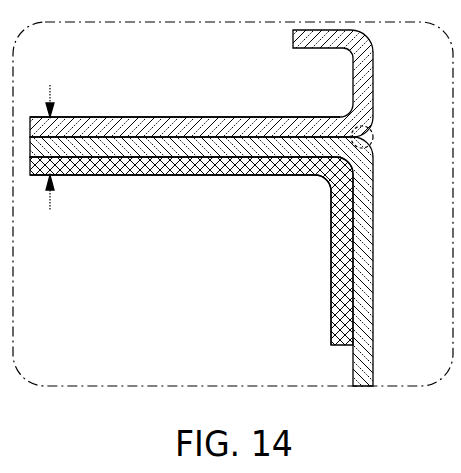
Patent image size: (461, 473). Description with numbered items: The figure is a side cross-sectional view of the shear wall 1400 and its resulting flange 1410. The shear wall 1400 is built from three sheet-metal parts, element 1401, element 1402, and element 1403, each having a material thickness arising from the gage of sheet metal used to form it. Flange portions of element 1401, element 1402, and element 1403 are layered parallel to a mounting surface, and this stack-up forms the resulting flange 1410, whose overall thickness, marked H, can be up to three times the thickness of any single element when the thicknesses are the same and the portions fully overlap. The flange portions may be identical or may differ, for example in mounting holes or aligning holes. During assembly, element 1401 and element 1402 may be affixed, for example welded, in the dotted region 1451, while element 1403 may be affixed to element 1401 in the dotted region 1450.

The shear wall 1400 is at (257, 52).
The element 1401 is at (352, 377).
The element 1402 is at (350, 97).
The element 1403 is at (332, 290).
The resulting flange 1410 is at (183, 117).
The region 1450 is at (329, 211).
The region 1451 is at (374, 135).
The stack height H is at (50, 161).